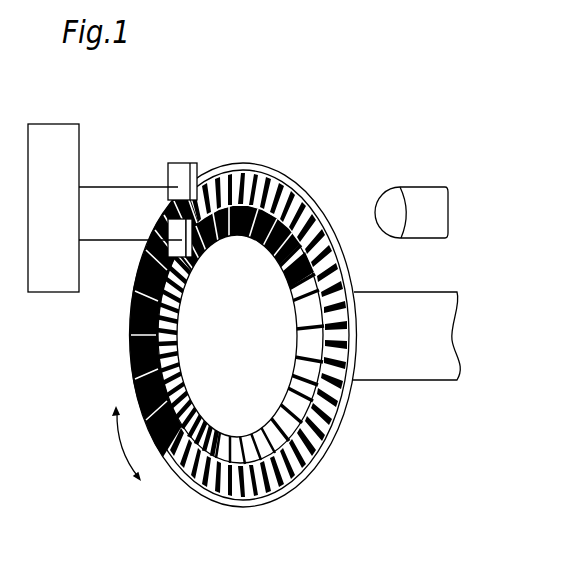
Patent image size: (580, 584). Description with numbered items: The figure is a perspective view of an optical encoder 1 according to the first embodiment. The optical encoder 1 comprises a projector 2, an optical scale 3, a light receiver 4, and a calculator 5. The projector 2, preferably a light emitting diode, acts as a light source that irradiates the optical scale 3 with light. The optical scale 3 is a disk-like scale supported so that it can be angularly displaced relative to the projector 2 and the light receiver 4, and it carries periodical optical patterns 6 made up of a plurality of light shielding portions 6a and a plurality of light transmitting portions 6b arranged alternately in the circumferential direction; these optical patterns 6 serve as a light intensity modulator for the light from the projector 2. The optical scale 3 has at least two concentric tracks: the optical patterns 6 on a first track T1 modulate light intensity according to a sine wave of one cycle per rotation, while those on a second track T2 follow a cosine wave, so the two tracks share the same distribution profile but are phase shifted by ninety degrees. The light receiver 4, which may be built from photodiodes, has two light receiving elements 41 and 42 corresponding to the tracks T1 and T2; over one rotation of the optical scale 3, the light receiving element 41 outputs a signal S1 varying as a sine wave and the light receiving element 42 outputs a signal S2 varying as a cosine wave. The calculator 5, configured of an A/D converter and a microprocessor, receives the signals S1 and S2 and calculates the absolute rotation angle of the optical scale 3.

The optical encoder 1 is at (334, 86).
The projector 2 is at (420, 200).
The optical scale 3 is at (301, 190).
The light receiver 4 is at (287, 80).
The light receiving element 41 is at (182, 175).
The light receiving element 42 is at (183, 241).
The calculator 5 is at (50, 128).
The periodical optical patterns 6 is at (413, 414).
The light shielding portions 6a is at (326, 404).
The light transmitting portions 6b is at (318, 443).
The signal S1 is at (128, 172).
The signal S2 is at (130, 224).
The first track T1 is at (330, 373).
The second track T2 is at (200, 437).